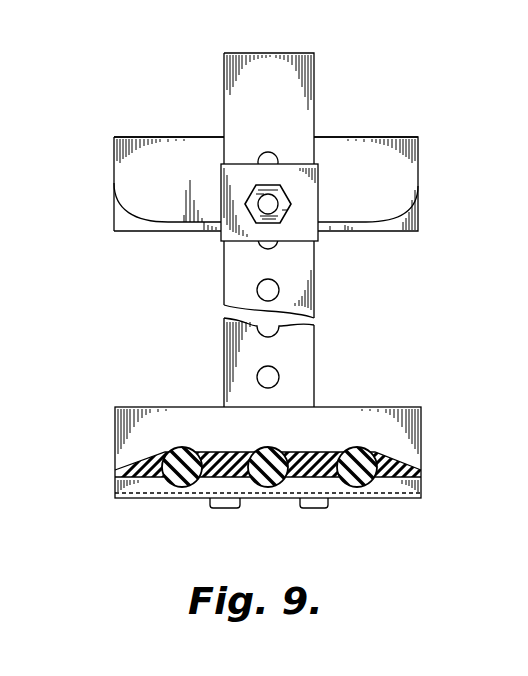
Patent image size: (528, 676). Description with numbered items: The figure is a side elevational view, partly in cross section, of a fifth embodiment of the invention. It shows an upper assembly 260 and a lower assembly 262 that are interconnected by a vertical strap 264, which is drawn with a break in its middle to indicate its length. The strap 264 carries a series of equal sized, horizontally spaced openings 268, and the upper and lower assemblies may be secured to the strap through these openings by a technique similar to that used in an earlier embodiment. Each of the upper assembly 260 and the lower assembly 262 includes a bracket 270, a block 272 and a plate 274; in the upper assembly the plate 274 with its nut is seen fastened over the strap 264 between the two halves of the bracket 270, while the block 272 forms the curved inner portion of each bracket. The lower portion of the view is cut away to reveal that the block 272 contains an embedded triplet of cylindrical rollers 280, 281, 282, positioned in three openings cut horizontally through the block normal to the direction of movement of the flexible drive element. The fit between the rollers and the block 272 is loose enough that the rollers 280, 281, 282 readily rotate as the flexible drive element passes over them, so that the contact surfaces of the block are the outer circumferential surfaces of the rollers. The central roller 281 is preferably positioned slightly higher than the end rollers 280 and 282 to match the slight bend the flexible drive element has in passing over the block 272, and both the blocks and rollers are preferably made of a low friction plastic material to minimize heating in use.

The upper assembly 260 is at (145, 135).
The lower assembly 262 is at (110, 449).
The strap 264 is at (305, 92).
The openings 268 is at (272, 292).
The bracket 270 is at (128, 166).
The block 272 is at (118, 220).
The plate 274 is at (305, 187).
The cylindrical roller 280 is at (176, 488).
The central roller 281 is at (263, 488).
The cylindrical roller 282 is at (352, 488).